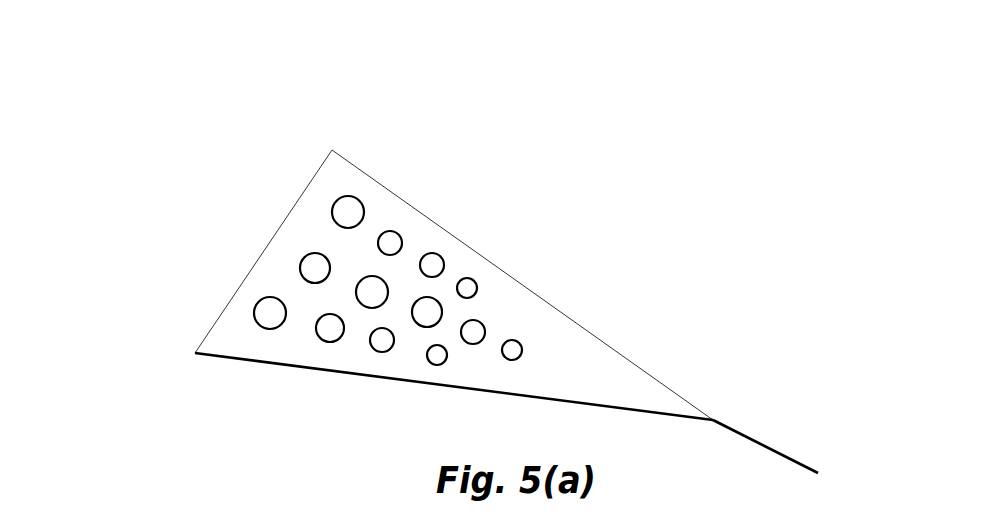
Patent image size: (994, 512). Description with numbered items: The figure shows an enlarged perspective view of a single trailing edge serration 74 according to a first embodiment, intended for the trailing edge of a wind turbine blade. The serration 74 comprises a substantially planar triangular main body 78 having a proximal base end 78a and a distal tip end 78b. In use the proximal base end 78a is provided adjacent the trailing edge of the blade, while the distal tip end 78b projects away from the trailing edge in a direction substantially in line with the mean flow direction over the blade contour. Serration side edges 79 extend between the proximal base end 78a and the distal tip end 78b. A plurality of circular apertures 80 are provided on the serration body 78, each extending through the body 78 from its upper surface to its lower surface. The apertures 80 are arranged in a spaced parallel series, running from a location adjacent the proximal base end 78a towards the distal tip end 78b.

The serration 74 is at (633, 218).
The triangular main body 78 is at (603, 375).
The proximal base end 78a is at (240, 288).
The distal tip end 78b is at (790, 458).
The serration side edges 79 is at (453, 235).
The circular apertures 80 is at (342, 208).